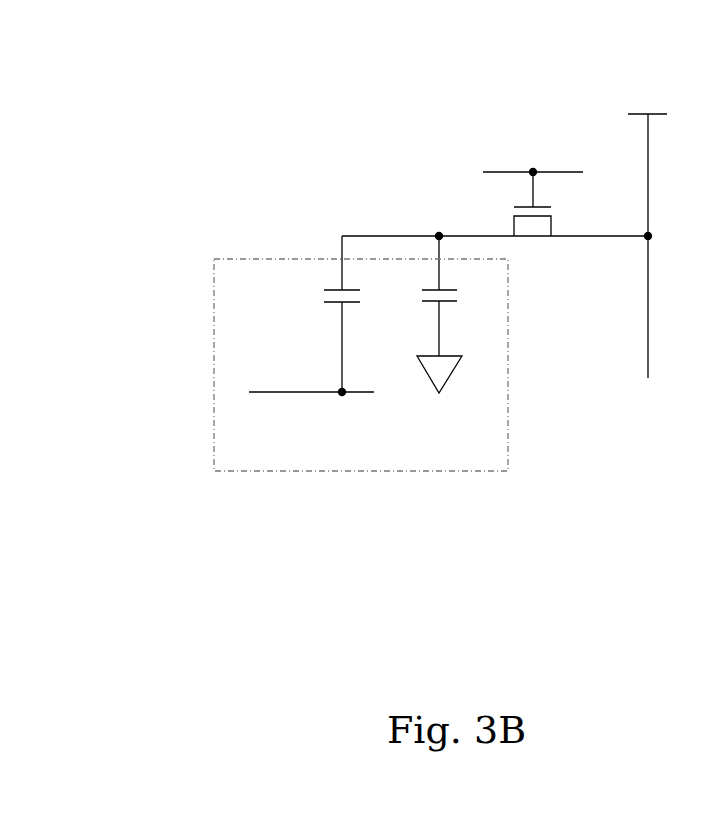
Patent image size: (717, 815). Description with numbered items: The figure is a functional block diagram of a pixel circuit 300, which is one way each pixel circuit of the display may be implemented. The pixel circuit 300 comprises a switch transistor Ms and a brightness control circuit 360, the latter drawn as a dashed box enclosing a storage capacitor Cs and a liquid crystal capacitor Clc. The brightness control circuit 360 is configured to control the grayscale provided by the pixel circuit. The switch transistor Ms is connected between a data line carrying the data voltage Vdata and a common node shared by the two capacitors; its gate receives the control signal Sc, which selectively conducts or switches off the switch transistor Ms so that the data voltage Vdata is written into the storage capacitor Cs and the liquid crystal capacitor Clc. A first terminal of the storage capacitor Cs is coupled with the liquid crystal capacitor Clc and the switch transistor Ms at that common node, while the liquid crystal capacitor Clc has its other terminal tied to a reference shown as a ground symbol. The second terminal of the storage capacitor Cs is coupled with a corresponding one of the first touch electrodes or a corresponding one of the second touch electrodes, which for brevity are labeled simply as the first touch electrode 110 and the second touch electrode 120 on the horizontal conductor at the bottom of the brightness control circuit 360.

The pixel circuit 300 is at (78, 43).
The brightness control circuit 360 is at (215, 365).
The first touch electrode 110 is at (290, 393).
The second touch electrode 120 is at (311, 392).
The data voltage Vdata is at (642, 233).
The control signal Sc is at (517, 173).
The switch transistor Ms is at (532, 218).
The storage capacitor Cs is at (326, 314).
The liquid crystal capacitor Clc is at (456, 314).